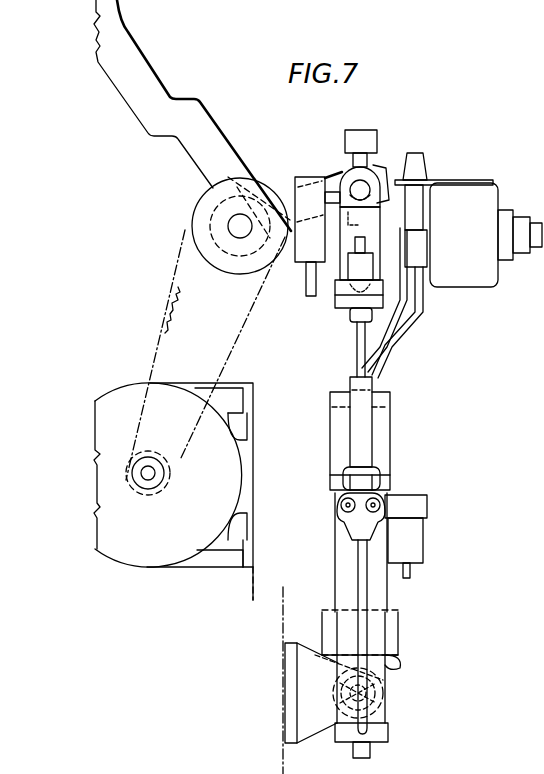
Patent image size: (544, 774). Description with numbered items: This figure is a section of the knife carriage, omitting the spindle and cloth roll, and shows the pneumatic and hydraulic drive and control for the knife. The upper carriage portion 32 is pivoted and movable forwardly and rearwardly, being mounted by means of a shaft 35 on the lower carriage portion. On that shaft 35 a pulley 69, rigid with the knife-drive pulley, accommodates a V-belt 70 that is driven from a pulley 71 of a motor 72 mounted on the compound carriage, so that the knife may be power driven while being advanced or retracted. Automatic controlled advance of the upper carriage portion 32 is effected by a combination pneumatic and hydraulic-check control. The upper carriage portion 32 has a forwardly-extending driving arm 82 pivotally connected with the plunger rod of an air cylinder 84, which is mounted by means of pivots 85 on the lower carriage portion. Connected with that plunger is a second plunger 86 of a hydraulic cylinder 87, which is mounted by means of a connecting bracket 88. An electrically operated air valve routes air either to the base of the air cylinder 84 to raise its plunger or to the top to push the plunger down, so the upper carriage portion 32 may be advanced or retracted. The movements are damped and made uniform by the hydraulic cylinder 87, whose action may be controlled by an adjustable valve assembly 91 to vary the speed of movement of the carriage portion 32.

The upper carriage portion 32 is at (215, 145).
The shaft 35 is at (238, 226).
The pulley 69 is at (232, 275).
The V-belt 70 is at (232, 348).
The pulley 71 is at (158, 442).
The motor 72 is at (223, 490).
The driving arm 82 is at (290, 197).
The air cylinder 84 is at (393, 622).
The pivots 85 is at (383, 690).
The second plunger 86 is at (362, 340).
The cylinder 87 is at (377, 642).
The connecting bracket 88 is at (390, 450).
The adjustable valve assembly 91 is at (413, 215).